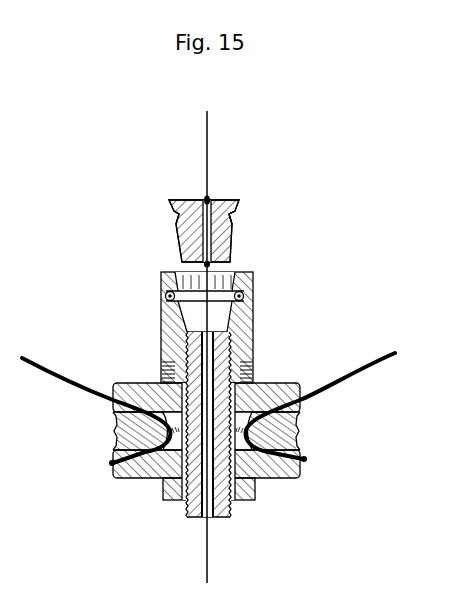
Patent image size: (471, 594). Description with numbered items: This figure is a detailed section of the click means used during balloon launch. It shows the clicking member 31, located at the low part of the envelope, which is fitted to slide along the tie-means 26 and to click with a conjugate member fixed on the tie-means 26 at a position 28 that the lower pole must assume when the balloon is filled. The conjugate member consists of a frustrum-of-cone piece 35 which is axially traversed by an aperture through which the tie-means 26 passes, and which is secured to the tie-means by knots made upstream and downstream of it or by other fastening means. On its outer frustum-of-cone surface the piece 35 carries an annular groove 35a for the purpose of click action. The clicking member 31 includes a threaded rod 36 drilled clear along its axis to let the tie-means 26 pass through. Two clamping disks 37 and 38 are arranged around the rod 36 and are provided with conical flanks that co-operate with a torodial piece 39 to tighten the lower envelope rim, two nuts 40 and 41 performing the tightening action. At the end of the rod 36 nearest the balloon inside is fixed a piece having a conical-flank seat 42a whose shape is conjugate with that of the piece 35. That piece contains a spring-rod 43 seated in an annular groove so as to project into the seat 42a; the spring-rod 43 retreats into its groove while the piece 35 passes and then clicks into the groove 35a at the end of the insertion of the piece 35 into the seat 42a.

The tie-means 26 is at (207, 139).
The position on the tie-means 28 is at (149, 227).
The clicking member 31 is at (208, 415).
The frustrum-of-cone piece 35 is at (222, 198).
The annular groove 35a is at (238, 215).
The threaded rod 36 is at (192, 518).
The clamping disk 37 is at (143, 473).
The clamping disk 38 is at (138, 386).
The torodial piece 39 is at (115, 431).
The nut 40 is at (247, 499).
The nut 41 is at (252, 373).
The conical-flank seat 42a is at (254, 317).
The spring-rod 43 is at (167, 297).